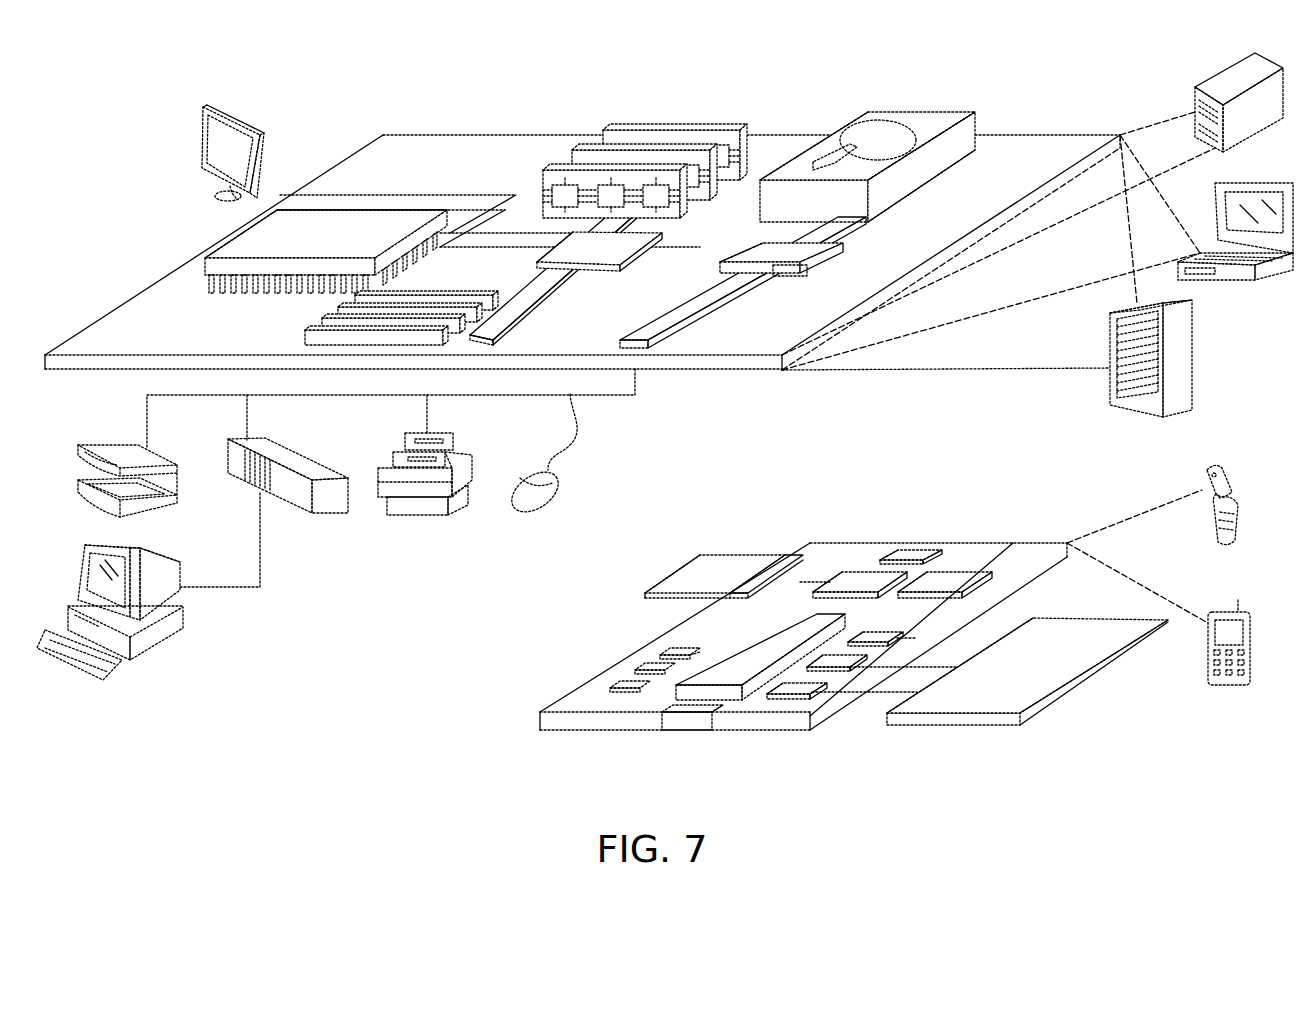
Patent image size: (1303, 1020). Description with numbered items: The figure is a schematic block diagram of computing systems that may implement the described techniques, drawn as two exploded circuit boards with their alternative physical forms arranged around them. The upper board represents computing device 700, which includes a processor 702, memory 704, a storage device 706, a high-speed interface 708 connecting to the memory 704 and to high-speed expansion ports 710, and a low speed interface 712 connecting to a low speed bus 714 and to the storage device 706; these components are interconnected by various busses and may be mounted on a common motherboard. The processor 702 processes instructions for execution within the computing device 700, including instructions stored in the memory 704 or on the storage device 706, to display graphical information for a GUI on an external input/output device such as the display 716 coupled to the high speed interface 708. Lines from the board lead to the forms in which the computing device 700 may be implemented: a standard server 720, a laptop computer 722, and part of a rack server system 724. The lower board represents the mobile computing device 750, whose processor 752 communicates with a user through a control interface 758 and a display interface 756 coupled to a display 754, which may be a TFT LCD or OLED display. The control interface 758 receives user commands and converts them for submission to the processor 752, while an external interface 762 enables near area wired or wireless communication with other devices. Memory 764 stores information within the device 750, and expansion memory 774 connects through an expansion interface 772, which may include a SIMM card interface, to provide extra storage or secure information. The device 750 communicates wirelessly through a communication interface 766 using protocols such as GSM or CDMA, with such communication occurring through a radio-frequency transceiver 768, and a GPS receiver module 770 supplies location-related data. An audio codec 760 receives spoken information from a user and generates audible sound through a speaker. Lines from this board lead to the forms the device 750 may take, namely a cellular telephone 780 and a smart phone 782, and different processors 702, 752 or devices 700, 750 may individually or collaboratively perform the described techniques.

The computing device 700 is at (330, 78).
The processor 702 is at (228, 236).
The memory 704 is at (678, 128).
The storage device 706 is at (908, 110).
The high-speed interface 708 is at (612, 245).
The high-speed expansion ports 710 is at (330, 315).
The low speed interface 712 is at (757, 248).
The low speed bus 714 is at (642, 343).
The display 716 is at (208, 104).
The standard server 720 is at (1215, 82).
The laptop computer 722 is at (1275, 182).
The rack server system 724 is at (1195, 360).
The computing device 750 is at (490, 738).
The processor 752 is at (731, 662).
The display 754 is at (1068, 632).
The display interface 756 is at (818, 688).
The control interface 758 is at (848, 665).
The audio codec 760 is at (882, 632).
The external interface 762 is at (688, 718).
The memory 764 is at (645, 672).
The communication interface 766 is at (860, 578).
The transceiver 768 is at (952, 578).
The GPS receiver module 770 is at (913, 552).
The expansion interface 772 is at (785, 553).
The expansion memory 774 is at (701, 553).
The cellular telephone 780 is at (1212, 468).
The smart phone 782 is at (1223, 610).